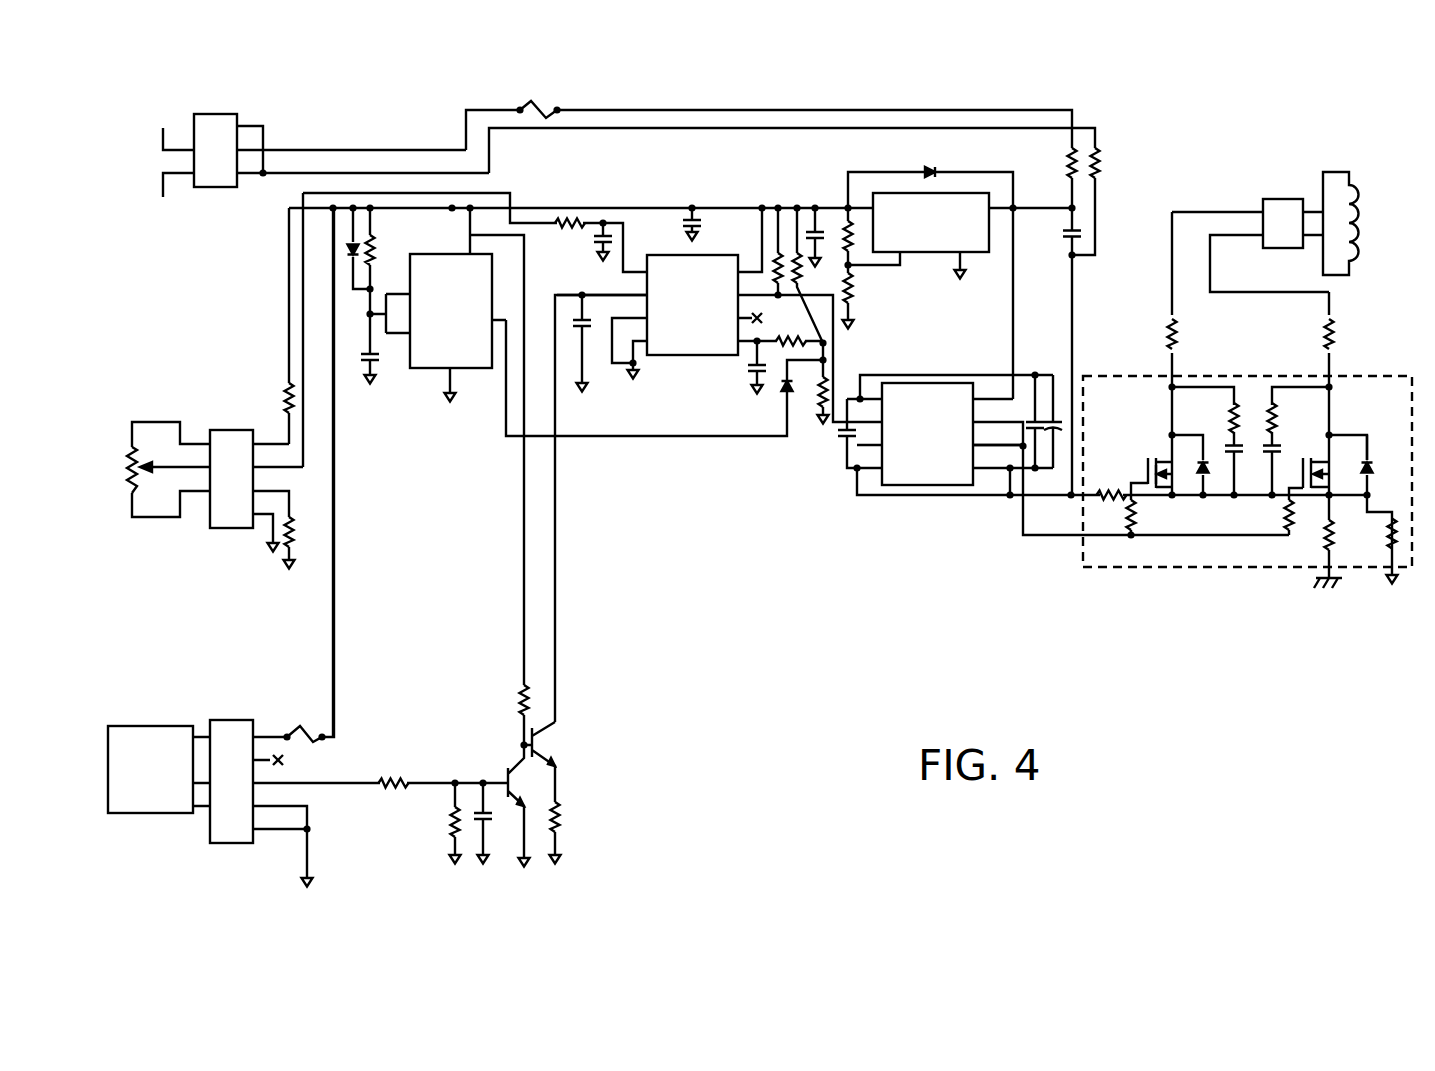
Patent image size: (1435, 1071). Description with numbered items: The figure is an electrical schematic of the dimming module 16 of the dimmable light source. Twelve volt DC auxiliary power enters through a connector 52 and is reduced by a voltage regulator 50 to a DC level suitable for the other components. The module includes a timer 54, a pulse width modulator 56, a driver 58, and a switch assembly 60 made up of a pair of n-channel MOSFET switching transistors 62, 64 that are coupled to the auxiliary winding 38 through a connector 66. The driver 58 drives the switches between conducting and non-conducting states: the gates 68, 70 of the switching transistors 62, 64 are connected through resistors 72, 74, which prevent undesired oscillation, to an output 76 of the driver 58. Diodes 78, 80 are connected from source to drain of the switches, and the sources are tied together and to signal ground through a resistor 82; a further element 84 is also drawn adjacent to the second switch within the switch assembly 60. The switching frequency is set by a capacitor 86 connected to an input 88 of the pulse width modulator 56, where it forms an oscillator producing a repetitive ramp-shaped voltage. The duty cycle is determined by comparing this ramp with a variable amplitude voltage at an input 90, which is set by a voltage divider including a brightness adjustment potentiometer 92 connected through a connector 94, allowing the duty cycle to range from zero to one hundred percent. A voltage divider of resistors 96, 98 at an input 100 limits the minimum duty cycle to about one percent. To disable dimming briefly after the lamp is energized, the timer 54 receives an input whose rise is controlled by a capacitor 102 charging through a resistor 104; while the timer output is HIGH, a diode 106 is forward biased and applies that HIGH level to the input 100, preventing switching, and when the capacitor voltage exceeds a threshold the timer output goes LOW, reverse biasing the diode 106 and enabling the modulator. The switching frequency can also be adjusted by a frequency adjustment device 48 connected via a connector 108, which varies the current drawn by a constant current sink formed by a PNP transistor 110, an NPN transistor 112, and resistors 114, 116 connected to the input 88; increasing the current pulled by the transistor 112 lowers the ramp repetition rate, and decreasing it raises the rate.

The dimming module 16 is at (702, 639).
The auxiliary winding 38 is at (1341, 172).
The frequency adjustment device 48 is at (150, 813).
The voltage regulator 50 is at (922, 253).
The connector 52 is at (212, 188).
The timer 54 is at (447, 369).
The pulse width modulator 56 is at (679, 360).
The driver 58 is at (928, 486).
The switch assembly 60 is at (1150, 568).
The switching transistor 62 is at (1135, 459).
The switching transistor 64 is at (1298, 463).
The connector 66 is at (1288, 198).
The gate 68 is at (1140, 483).
The gate 70 is at (1319, 541).
The resistor 72 is at (1135, 517).
The resistor 74 is at (1287, 518).
The output 76 is at (1001, 440).
The diode 78 is at (1205, 457).
The diode 80 is at (1370, 468).
The resistor 82 is at (1165, 457).
The diode 84 is at (1367, 447).
The capacitor 86 is at (579, 313).
The input 88 is at (636, 292).
The input 90 is at (627, 256).
The potentiometer 92 is at (136, 483).
The connector 94 is at (235, 428).
The resistor 96 is at (801, 270).
The resistor 98 is at (816, 400).
The input 100 is at (754, 350).
The capacitor 102 is at (371, 372).
The resistor 104 is at (377, 247).
The diode 106 is at (784, 397).
The connector 108 is at (232, 719).
The transistor 110 is at (505, 780).
The transistor 112 is at (545, 746).
The resistor 114 is at (518, 700).
The resistor 116 is at (558, 812).